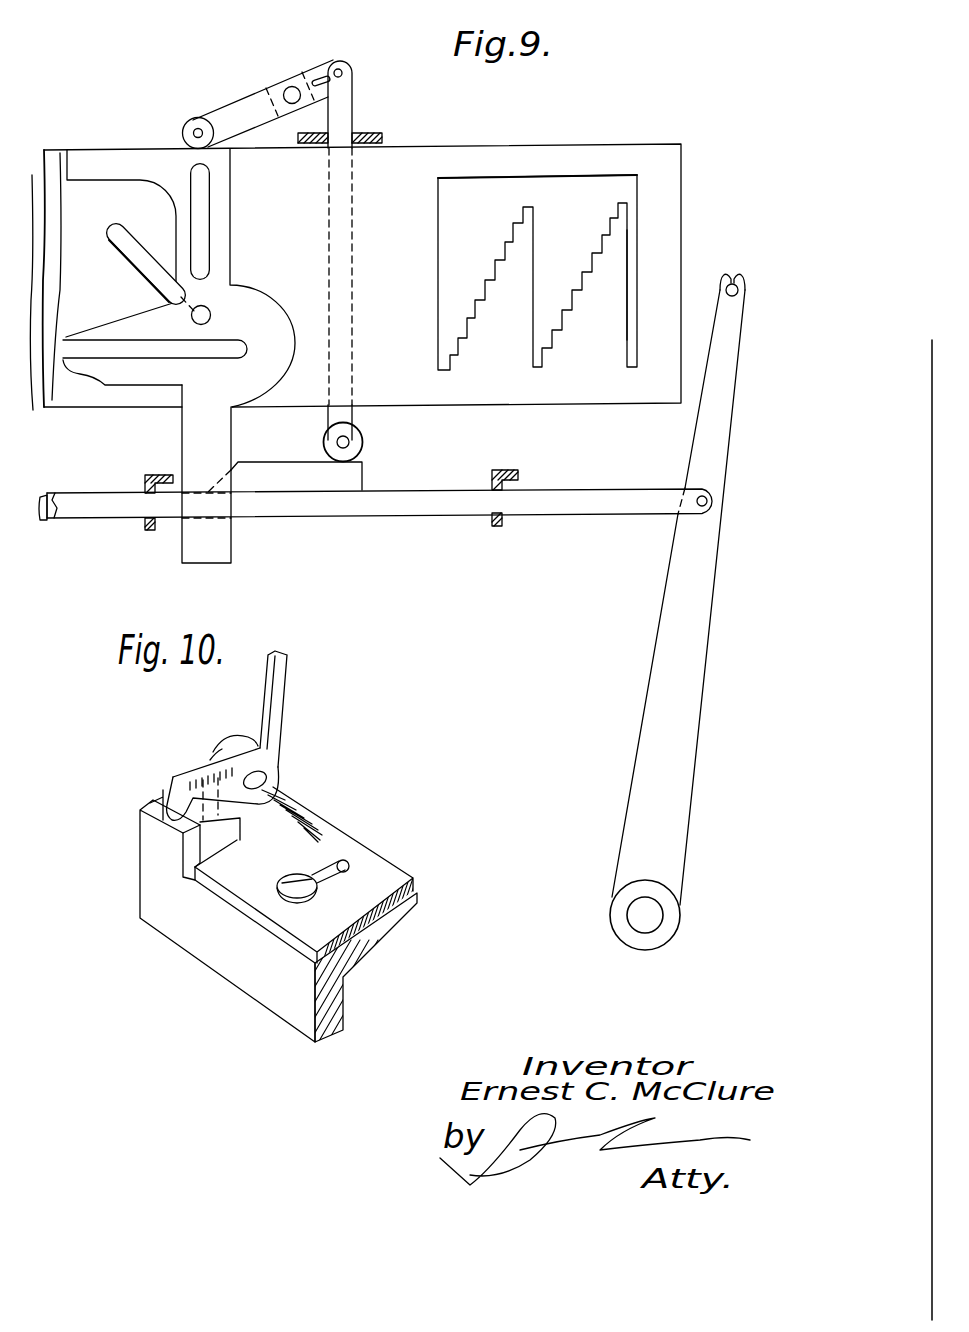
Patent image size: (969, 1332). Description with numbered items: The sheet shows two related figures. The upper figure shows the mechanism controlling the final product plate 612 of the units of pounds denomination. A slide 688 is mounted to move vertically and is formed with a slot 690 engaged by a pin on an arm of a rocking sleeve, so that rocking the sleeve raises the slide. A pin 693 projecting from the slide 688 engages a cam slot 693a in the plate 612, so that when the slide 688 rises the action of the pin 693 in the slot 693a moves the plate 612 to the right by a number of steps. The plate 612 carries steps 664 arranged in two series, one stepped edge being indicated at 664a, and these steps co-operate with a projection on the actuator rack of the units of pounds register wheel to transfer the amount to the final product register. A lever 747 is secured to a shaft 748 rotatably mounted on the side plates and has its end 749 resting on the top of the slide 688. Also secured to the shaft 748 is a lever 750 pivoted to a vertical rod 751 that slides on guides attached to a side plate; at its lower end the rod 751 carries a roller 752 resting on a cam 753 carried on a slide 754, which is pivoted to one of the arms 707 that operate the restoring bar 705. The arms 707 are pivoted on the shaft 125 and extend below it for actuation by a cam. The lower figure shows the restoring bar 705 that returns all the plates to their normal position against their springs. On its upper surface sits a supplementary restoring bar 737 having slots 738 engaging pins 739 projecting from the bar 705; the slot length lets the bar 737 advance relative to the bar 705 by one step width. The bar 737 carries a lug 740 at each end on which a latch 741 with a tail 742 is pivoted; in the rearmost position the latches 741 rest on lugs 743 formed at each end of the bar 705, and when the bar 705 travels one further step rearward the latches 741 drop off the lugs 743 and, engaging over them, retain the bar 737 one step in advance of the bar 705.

In FIG. 9, the plate 612 is at (95, 167).
In FIG. 9, the end of lever 749 is at (185, 128).
In FIG. 9, the lever 747 is at (243, 113).
In FIG. 9, the shaft 748 is at (294, 84).
In FIG. 9, the lever 750 is at (322, 67).
In FIG. 9, the steps 664 is at (598, 260).
In FIG. 9, the stepped edge 664a is at (633, 272).
In FIG. 9, the slide 688 is at (215, 239).
In FIG. 9, the vertical rod 751 is at (338, 276).
In FIG. 9, the cam slot 693a is at (127, 240).
In FIG. 9, the pin 693 is at (191, 313).
In FIG. 9, the roller 752 is at (362, 439).
In FIG. 9, the slot 690 is at (110, 347).
In FIG. 9, the cam 753 is at (293, 483).
In FIG. 9, the slide 754 is at (455, 507).
In FIG. 9, the arm 707 is at (663, 643).
In FIG. 9, the shaft 125 is at (635, 910).
In FIG. 10, the tail 742 is at (280, 683).
In FIG. 10, the lug 740 is at (237, 737).
In FIG. 10, the latch 741 is at (173, 775).
In FIG. 10, the pin 739 is at (300, 882).
In FIG. 10, the slot 738 is at (347, 858).
In FIG. 10, the supplementary restoring bar 737 is at (380, 868).
In FIG. 10, the lug 743 is at (163, 833).
In FIG. 10, the restoring bar 705 is at (230, 962).